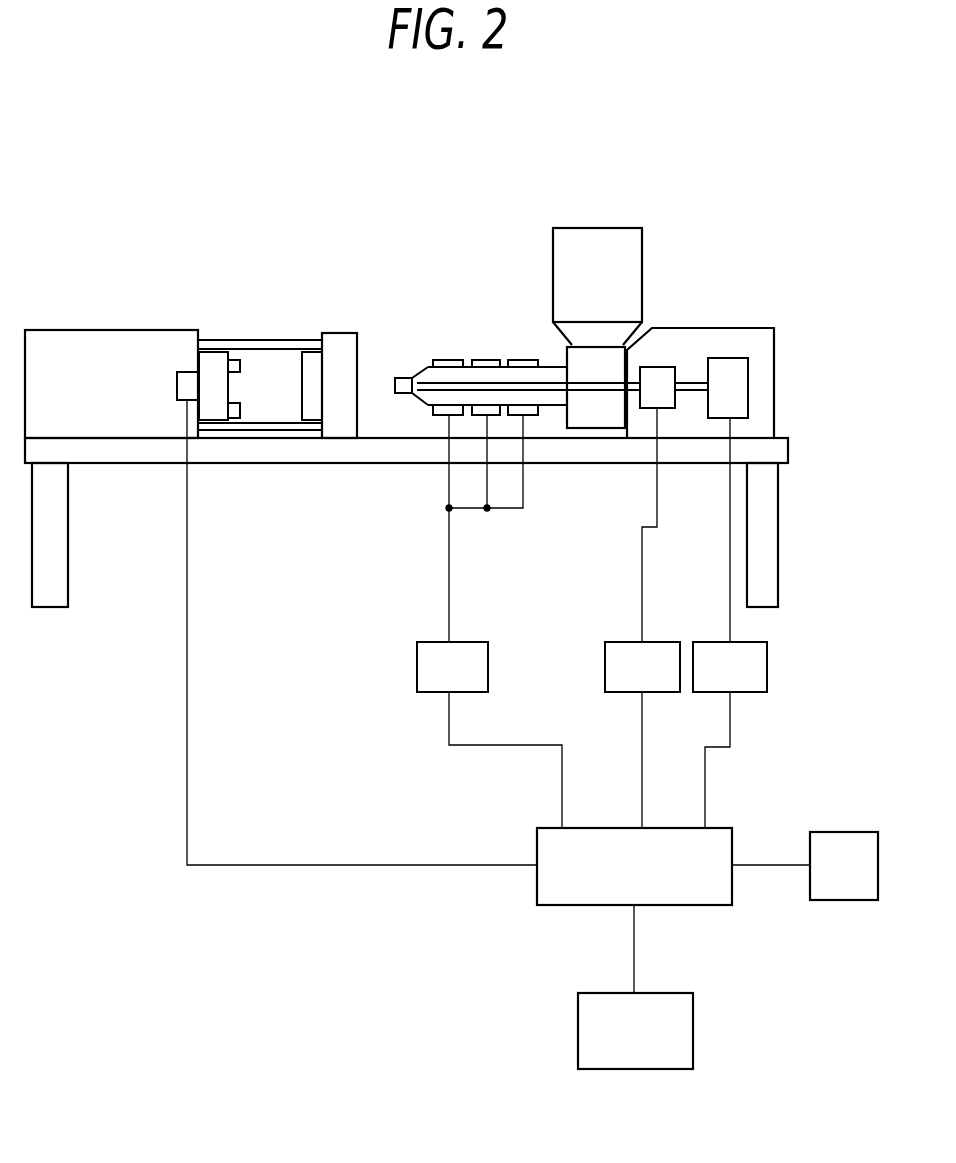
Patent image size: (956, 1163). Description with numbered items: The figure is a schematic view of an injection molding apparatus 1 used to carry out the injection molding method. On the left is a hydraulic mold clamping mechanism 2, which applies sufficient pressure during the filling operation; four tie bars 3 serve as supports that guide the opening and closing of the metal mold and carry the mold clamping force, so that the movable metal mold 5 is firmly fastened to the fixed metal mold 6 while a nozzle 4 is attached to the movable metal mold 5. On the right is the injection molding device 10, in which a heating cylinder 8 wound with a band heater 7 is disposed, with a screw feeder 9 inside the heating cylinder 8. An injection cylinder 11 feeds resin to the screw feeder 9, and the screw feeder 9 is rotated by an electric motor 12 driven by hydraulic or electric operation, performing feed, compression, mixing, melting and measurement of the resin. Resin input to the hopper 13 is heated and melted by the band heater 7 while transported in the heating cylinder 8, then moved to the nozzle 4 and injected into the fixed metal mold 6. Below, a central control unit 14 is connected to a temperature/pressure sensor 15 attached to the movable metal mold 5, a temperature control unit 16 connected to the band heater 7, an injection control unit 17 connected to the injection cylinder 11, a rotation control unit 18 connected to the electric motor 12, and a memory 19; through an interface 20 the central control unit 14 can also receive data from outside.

The injection molding apparatus 1 is at (412, 227).
The hydraulic mold clamping mechanism 2 is at (116, 338).
The tie bar 3 is at (280, 338).
The nozzle 4 is at (403, 378).
The movable metal mold 5 is at (218, 380).
The fixed metal mold 6 is at (313, 357).
The band heater 7 is at (525, 362).
The heating cylinder 8 is at (505, 377).
The screw feeder 9 is at (467, 388).
The injection molding device 10 is at (762, 340).
The injection cylinder 11 is at (660, 360).
The electric motor 12 is at (725, 360).
The hopper 13 is at (595, 240).
The central control unit 14 is at (567, 897).
The temperature/pressure sensor 15 is at (192, 373).
The temperature control unit 16 is at (417, 667).
The injection control unit 17 is at (605, 667).
The rotation control unit 18 is at (767, 666).
The memory 19 is at (585, 1030).
The interface 20 is at (845, 903).